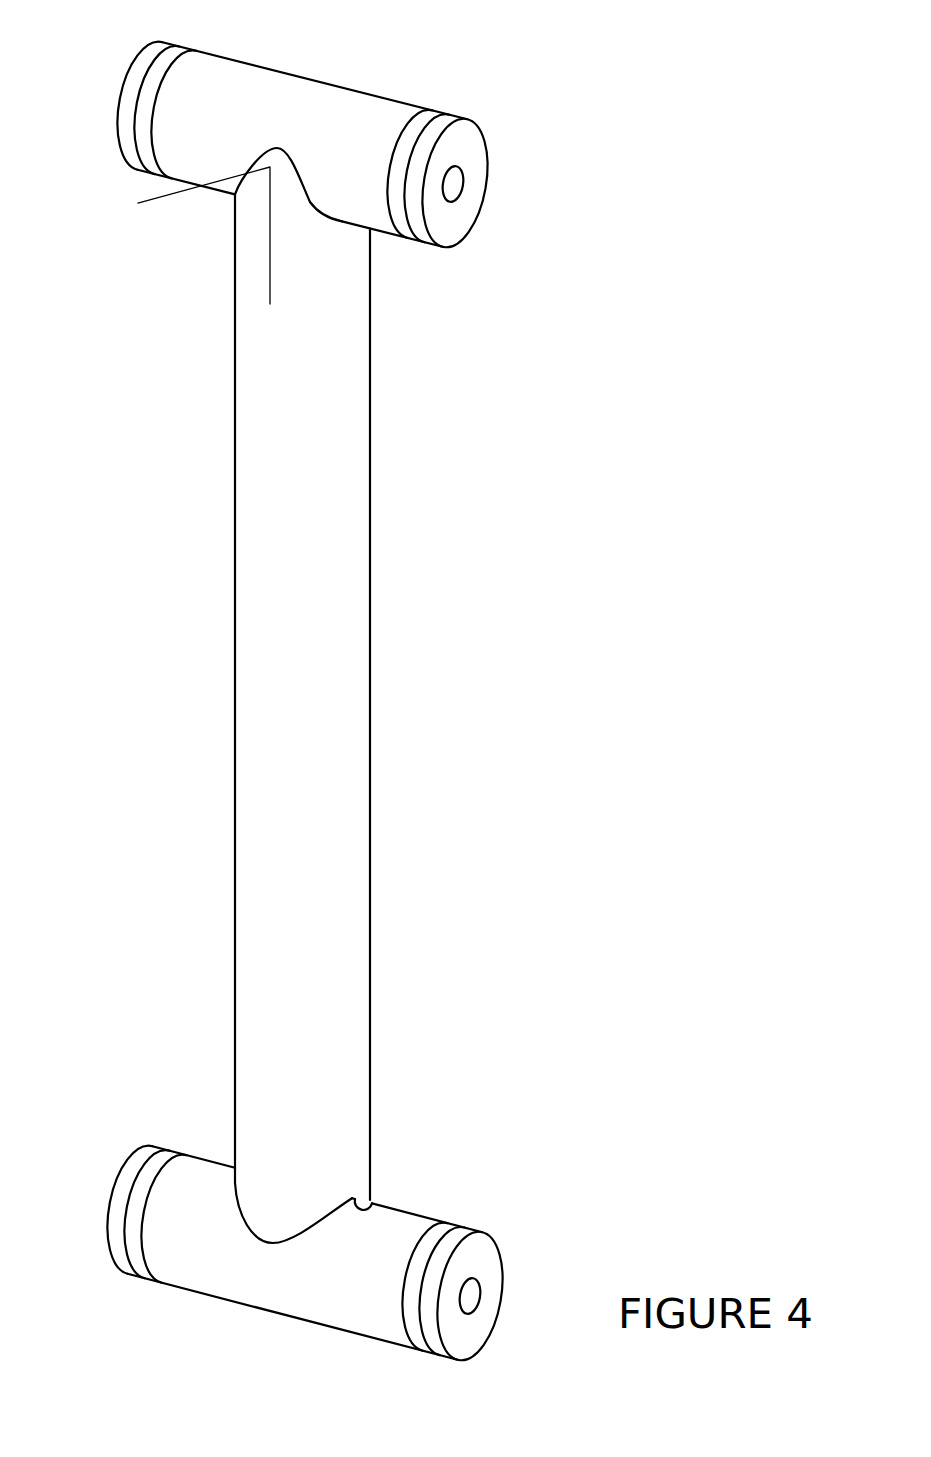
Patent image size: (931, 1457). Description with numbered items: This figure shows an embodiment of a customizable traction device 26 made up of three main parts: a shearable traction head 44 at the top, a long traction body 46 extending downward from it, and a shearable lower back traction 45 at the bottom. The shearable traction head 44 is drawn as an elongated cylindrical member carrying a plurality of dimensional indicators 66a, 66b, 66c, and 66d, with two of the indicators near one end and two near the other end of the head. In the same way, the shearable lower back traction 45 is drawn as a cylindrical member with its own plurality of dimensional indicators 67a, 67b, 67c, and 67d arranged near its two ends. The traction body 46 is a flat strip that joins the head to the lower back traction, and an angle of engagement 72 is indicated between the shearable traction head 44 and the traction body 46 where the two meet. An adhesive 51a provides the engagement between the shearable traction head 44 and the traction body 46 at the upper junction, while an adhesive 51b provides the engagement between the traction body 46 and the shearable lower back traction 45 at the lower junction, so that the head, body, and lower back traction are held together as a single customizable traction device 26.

The customizable traction device 26 is at (367, 62).
The shearable traction head 44 is at (475, 155).
The shearable lower back traction 45 is at (492, 1267).
The traction body 46 is at (357, 658).
The adhesive 51a is at (310, 203).
The adhesive 51b is at (375, 1202).
The dimensional indicator 66a is at (170, 77).
The dimensional indicator 66b is at (433, 118).
The dimensional indicator 66c is at (163, 104).
The dimensional indicator 66d is at (414, 118).
The dimensional indicator 67a is at (155, 1182).
The dimensional indicator 67b is at (446, 1237).
The dimensional indicator 67c is at (135, 1205).
The dimensional indicator 67d is at (428, 1237).
The angle of engagement 72 is at (138, 203).